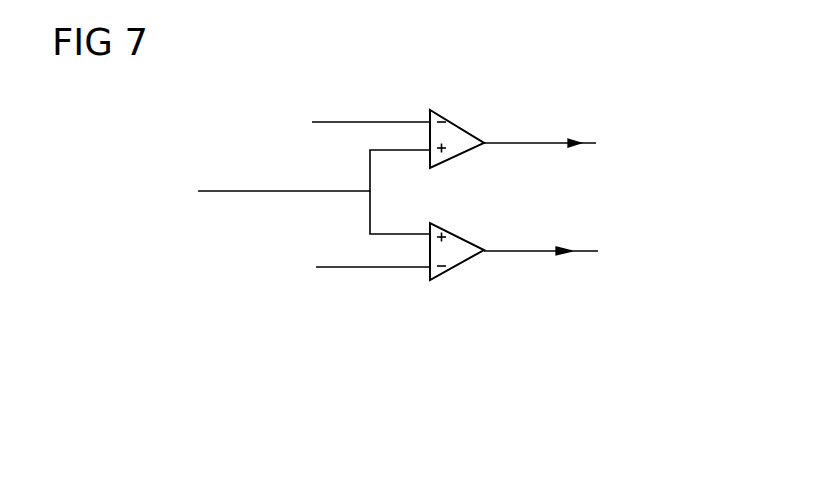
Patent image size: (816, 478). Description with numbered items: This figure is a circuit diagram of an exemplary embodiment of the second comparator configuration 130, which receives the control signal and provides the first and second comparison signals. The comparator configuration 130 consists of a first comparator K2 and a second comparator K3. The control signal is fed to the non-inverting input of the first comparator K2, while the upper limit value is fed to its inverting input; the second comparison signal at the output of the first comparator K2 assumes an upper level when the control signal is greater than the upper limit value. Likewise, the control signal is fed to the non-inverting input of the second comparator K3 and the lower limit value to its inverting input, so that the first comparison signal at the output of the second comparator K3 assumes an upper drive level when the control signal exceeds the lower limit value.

The second comparator configuration 130 is at (400, 261).
The first comparator K2 is at (458, 126).
The second comparator K3 is at (461, 243).